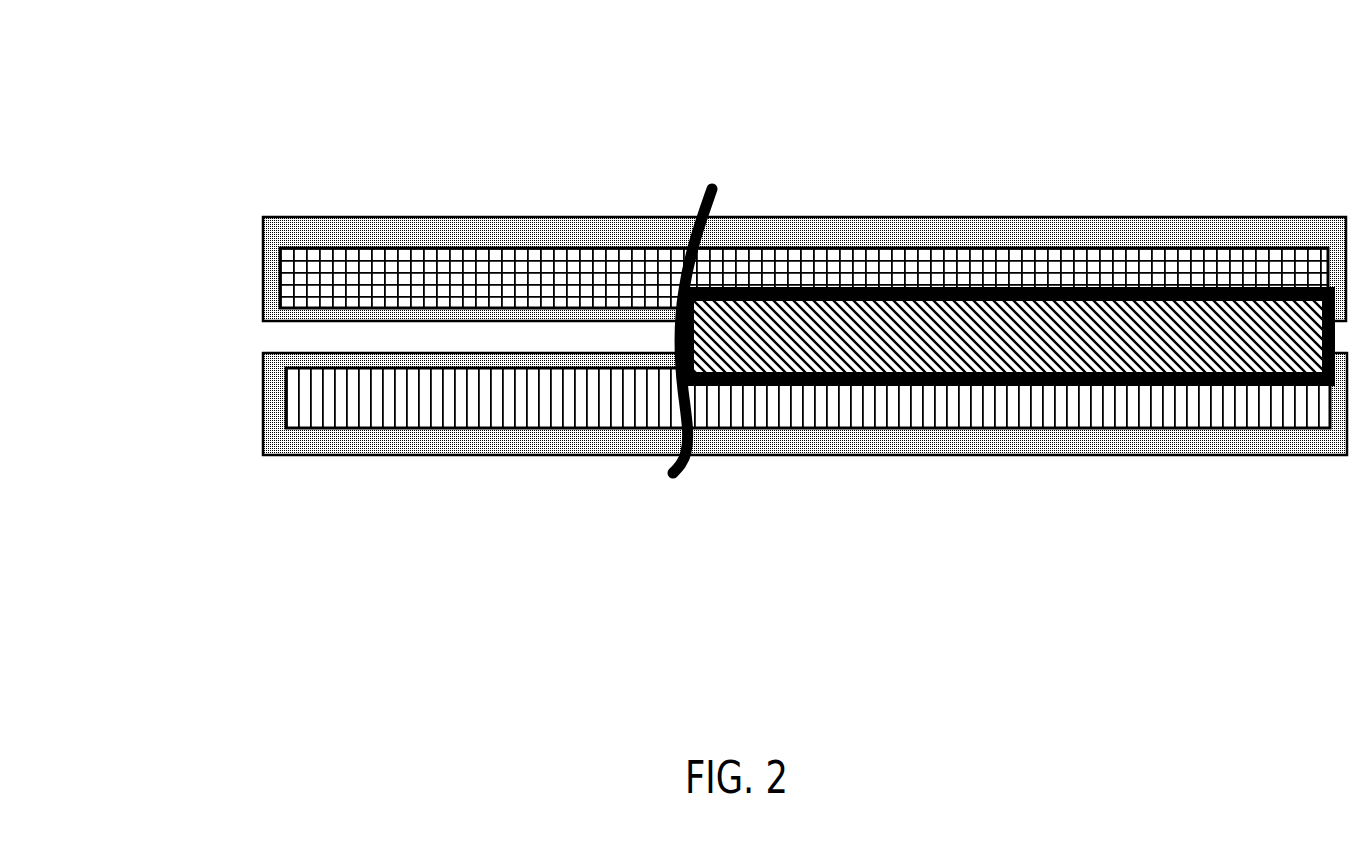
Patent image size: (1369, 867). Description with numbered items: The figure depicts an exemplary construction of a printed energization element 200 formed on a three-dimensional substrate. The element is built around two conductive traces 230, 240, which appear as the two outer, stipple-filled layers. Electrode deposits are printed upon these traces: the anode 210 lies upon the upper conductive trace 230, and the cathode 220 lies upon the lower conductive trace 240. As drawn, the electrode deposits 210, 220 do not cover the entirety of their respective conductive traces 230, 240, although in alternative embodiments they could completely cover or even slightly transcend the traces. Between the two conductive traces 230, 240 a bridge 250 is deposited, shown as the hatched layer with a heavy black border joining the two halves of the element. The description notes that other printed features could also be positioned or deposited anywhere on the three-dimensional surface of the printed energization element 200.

The printed energization element 200 is at (292, 108).
The anode 210 is at (320, 278).
The cathode 220 is at (327, 402).
The conductive trace 230 is at (1100, 217).
The conductive trace 240 is at (937, 455).
The bridge 250 is at (713, 330).